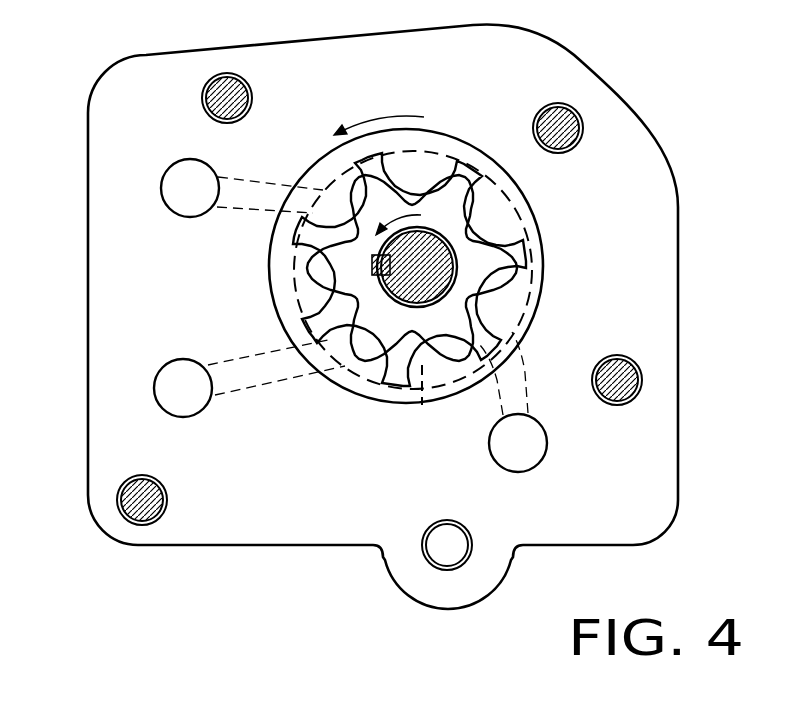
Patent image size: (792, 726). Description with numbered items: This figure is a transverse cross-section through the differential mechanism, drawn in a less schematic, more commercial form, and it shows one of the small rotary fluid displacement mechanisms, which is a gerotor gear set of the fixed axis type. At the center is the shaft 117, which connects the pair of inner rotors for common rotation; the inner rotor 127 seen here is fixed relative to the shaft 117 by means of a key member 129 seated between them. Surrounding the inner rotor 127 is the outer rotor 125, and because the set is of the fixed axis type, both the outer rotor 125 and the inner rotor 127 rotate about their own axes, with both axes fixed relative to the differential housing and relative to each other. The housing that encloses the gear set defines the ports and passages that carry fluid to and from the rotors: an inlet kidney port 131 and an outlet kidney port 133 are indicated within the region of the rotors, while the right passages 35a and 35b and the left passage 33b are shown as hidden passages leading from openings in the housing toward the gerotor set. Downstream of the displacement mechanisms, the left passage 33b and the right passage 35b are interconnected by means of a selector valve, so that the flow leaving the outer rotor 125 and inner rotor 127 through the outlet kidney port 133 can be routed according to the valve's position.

The shaft 117 is at (420, 300).
The outer rotor 125 is at (447, 147).
The inner rotor 127 is at (542, 276).
The key member 129 is at (372, 268).
The inlet kidney port 131 is at (526, 214).
The outlet kidney port 133 is at (421, 400).
The right passage 35a is at (253, 186).
The left passage 33b is at (237, 373).
The right passage 35b is at (527, 388).